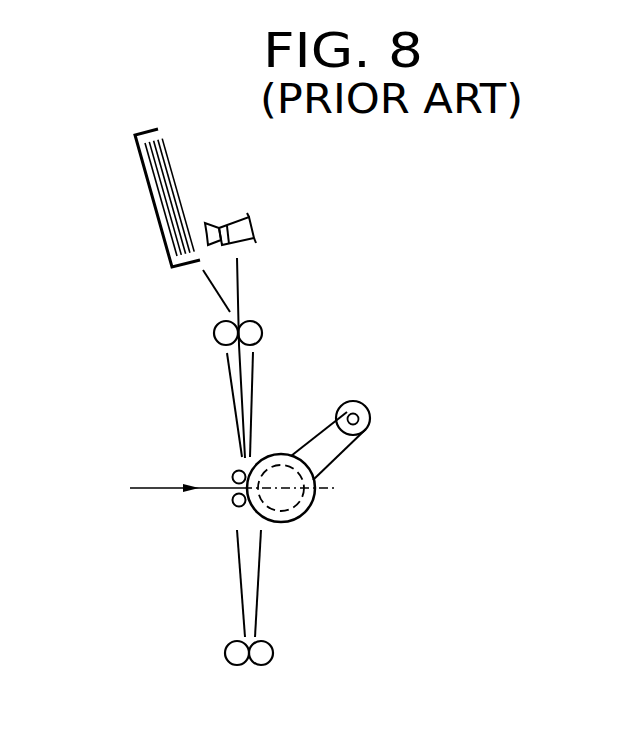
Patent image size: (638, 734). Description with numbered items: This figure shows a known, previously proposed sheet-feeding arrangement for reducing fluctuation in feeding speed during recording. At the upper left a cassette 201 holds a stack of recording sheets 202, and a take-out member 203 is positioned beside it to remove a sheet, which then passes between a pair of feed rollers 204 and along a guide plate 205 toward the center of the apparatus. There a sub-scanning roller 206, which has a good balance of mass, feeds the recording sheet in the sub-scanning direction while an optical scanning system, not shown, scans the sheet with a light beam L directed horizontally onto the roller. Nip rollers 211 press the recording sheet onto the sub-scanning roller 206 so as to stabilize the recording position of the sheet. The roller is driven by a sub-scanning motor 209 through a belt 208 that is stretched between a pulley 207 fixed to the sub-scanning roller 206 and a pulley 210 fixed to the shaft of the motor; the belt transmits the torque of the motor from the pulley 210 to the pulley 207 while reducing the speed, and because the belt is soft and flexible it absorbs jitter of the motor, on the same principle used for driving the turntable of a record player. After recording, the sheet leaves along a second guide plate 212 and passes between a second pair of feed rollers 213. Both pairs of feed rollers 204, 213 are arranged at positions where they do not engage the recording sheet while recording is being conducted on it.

The film cassette 201 is at (150, 130).
The stacked photosensitive film sheets 202 is at (168, 168).
The suction cup / sheet take-out member 203 is at (233, 219).
The feed rollers 204 is at (214, 330).
The guide plate 205 is at (257, 384).
The sub-scanning roller 206 is at (303, 518).
The pulley 207 is at (304, 496).
The belt 208 is at (338, 448).
The sub-scanning motor 209 is at (365, 404).
The pulley 210 is at (372, 418).
The nip rollers 211 is at (233, 470).
The guide plate 212 is at (258, 603).
The feed rollers 213 is at (225, 653).
The light beam L is at (145, 488).